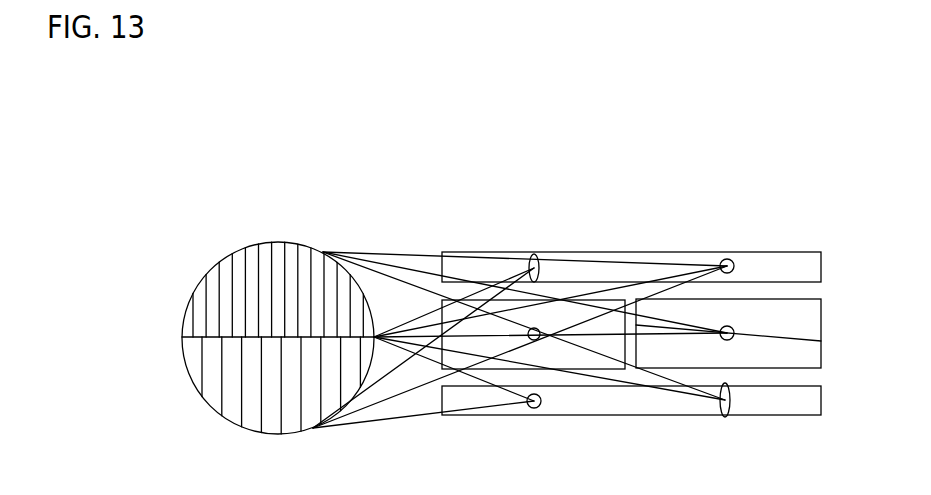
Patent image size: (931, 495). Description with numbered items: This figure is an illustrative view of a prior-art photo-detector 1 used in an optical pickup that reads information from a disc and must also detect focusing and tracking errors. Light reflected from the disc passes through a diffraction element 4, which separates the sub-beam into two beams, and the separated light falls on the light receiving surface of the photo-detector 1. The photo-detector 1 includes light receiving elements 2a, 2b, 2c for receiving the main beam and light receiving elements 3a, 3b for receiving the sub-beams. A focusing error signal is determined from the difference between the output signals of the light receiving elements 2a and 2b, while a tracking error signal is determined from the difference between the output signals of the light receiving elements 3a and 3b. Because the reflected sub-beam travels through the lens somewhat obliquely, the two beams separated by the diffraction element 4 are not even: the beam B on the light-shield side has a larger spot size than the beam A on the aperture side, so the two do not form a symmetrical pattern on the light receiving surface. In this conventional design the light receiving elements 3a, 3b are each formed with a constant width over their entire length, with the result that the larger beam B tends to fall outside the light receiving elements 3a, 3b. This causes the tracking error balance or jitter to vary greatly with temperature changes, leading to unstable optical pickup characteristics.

The photo-detector 1 is at (660, 322).
The diffraction element 4 is at (252, 231).
The light receiving element 2a is at (808, 315).
The light receiving element 2b is at (808, 356).
The light receiving element 2c is at (602, 364).
The light receiving element 3a is at (788, 262).
The light receiving element 3b is at (727, 417).
The beam A is at (727, 258).
The beam B is at (535, 254).